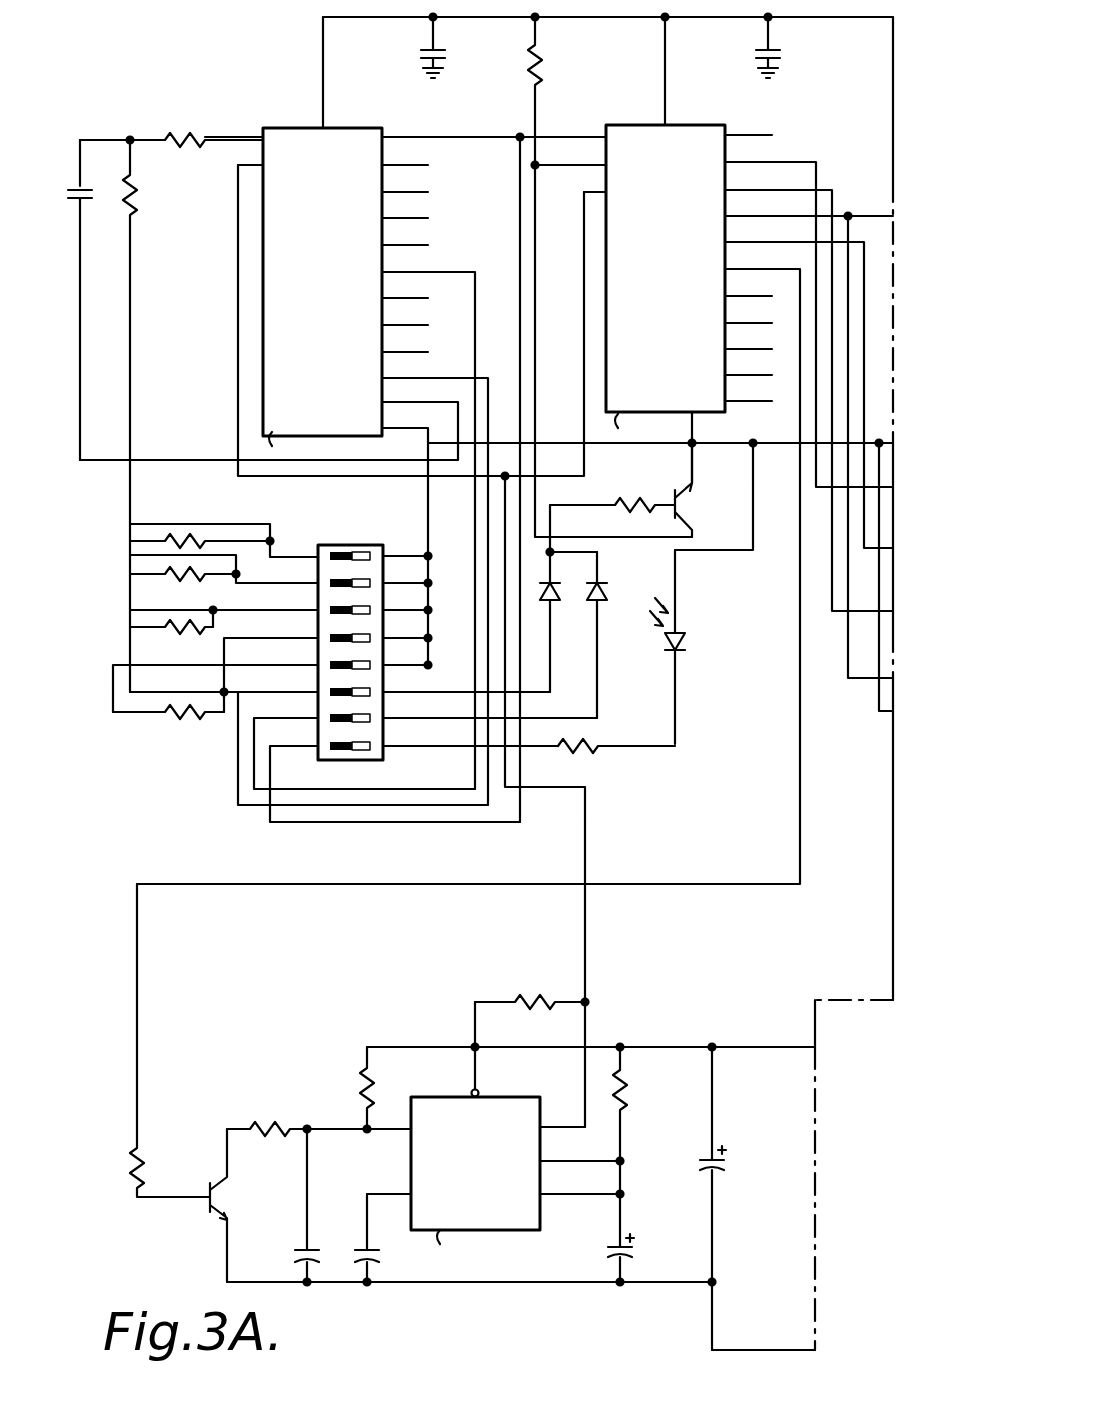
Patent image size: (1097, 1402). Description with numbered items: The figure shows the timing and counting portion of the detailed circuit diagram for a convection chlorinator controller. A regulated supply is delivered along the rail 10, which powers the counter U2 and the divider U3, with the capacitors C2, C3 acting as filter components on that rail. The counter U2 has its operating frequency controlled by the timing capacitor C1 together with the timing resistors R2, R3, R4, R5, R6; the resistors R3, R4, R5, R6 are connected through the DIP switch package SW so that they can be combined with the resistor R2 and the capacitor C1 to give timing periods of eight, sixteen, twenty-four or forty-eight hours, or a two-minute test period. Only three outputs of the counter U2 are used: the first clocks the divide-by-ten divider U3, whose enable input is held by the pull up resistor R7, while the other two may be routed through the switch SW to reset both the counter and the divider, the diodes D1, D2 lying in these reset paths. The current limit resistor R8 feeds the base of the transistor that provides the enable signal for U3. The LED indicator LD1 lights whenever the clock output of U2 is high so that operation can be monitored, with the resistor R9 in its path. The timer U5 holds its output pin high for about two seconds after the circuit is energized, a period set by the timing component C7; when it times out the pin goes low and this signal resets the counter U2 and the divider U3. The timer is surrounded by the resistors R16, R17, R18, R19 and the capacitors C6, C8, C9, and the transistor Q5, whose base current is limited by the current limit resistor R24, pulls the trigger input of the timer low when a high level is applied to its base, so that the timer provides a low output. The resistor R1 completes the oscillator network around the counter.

The rail 10 is at (688, 20).
The timing capacitor C1 is at (74, 186).
The filter capacitor C2 is at (437, 42).
The filter capacitor C3 is at (780, 40).
The capacitor C6 is at (299, 1248).
The timing component C7 is at (364, 1248).
The capacitor C8 is at (636, 1254).
The capacitor C9 is at (728, 1168).
The resistor R1 is at (181, 134).
The timing resistor R2 is at (136, 195).
The timing resistor R3 is at (160, 541).
The timing resistor R4 is at (160, 574).
The timing resistor R5 is at (160, 627).
The timing resistor R6 is at (182, 724).
The pull up resistor R7 is at (545, 66).
The current limit resistor R8 is at (645, 500).
The resistor R9 is at (580, 752).
The resistor R16 is at (254, 1126).
The resistor R17 is at (357, 1085).
The resistor R18 is at (631, 1082).
The resistor R19 is at (538, 996).
The current limit resistor R24 is at (136, 1166).
The 4060 counter U2 is at (302, 126).
The divide by 10 divider U3 is at (655, 123).
The NE555 timer U5 is at (448, 1096).
The DIP switch package SW is at (345, 762).
The diode D1 is at (555, 604).
The diode D2 is at (603, 604).
The LED indicator LD1 is at (684, 642).
The transistor Q5 is at (222, 1188).